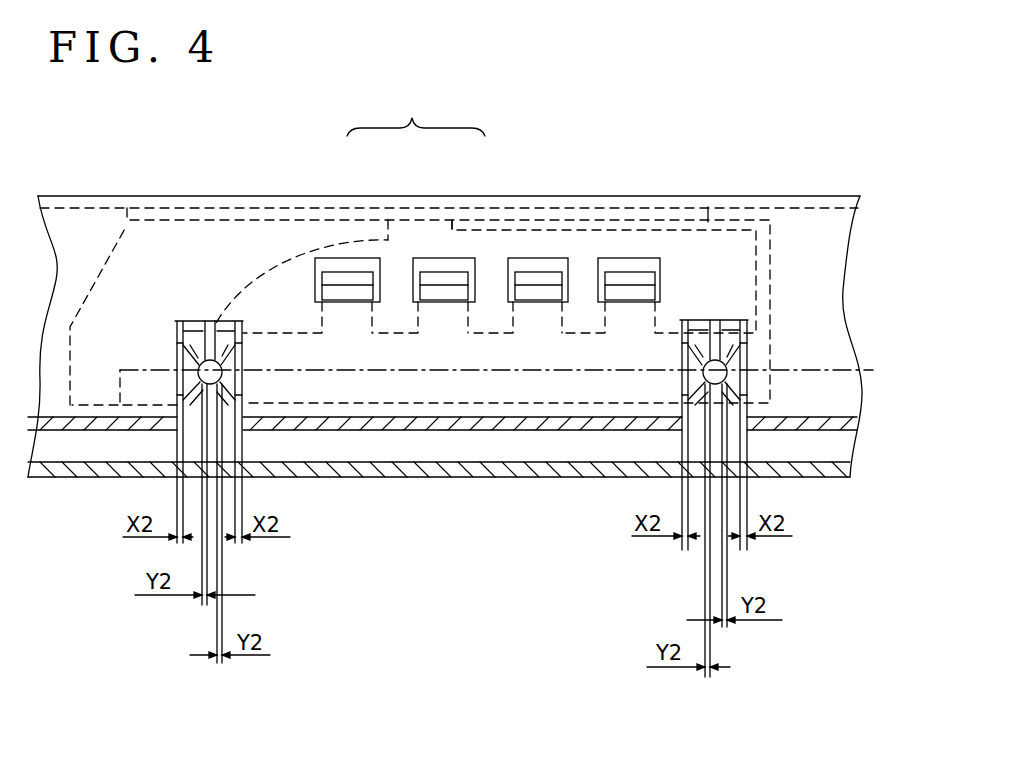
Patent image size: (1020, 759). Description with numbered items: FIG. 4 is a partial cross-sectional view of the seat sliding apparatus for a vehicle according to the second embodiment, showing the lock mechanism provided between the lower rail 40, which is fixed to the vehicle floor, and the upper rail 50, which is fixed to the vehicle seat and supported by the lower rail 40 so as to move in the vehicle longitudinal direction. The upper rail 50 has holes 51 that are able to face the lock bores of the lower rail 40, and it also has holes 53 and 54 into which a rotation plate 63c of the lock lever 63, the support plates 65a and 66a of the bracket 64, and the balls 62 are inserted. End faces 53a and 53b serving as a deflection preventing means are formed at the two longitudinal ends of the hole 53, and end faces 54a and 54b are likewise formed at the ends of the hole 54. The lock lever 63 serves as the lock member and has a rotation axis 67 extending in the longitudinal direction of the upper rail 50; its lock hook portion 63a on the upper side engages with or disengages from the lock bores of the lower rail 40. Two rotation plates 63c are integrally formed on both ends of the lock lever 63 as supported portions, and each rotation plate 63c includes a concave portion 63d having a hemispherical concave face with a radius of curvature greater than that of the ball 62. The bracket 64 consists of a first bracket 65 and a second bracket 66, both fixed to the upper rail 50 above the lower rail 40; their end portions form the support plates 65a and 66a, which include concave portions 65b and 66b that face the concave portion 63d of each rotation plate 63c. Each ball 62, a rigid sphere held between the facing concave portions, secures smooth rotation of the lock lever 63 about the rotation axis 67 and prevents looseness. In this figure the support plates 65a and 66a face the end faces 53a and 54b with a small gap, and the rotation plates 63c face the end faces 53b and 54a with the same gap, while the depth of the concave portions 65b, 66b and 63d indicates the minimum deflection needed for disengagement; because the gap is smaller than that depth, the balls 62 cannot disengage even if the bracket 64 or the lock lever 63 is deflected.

The lower rail 40 is at (820, 470).
The upper rail 50 is at (853, 230).
The hole 51 is at (543, 265).
The hole 53 is at (200, 320).
The end face 53a is at (183, 325).
The end face 53b is at (233, 337).
The hole 54 is at (733, 325).
The end face 54a is at (690, 335).
The end face 54b is at (740, 350).
The ball 62 is at (212, 358).
The lock lever 63 is at (475, 393).
The lock hook portion 63a is at (632, 280).
The rotation plate 63c is at (242, 375).
The concave portion 63d is at (240, 365).
The bracket 64 is at (416, 117).
The first bracket 65 is at (353, 220).
The support plate 65a is at (183, 398).
The concave portion 65b is at (195, 363).
The second bracket 66 is at (473, 222).
The support plate 66a is at (747, 390).
The concave portion 66b is at (743, 363).
The rotation axis 67 is at (511, 372).